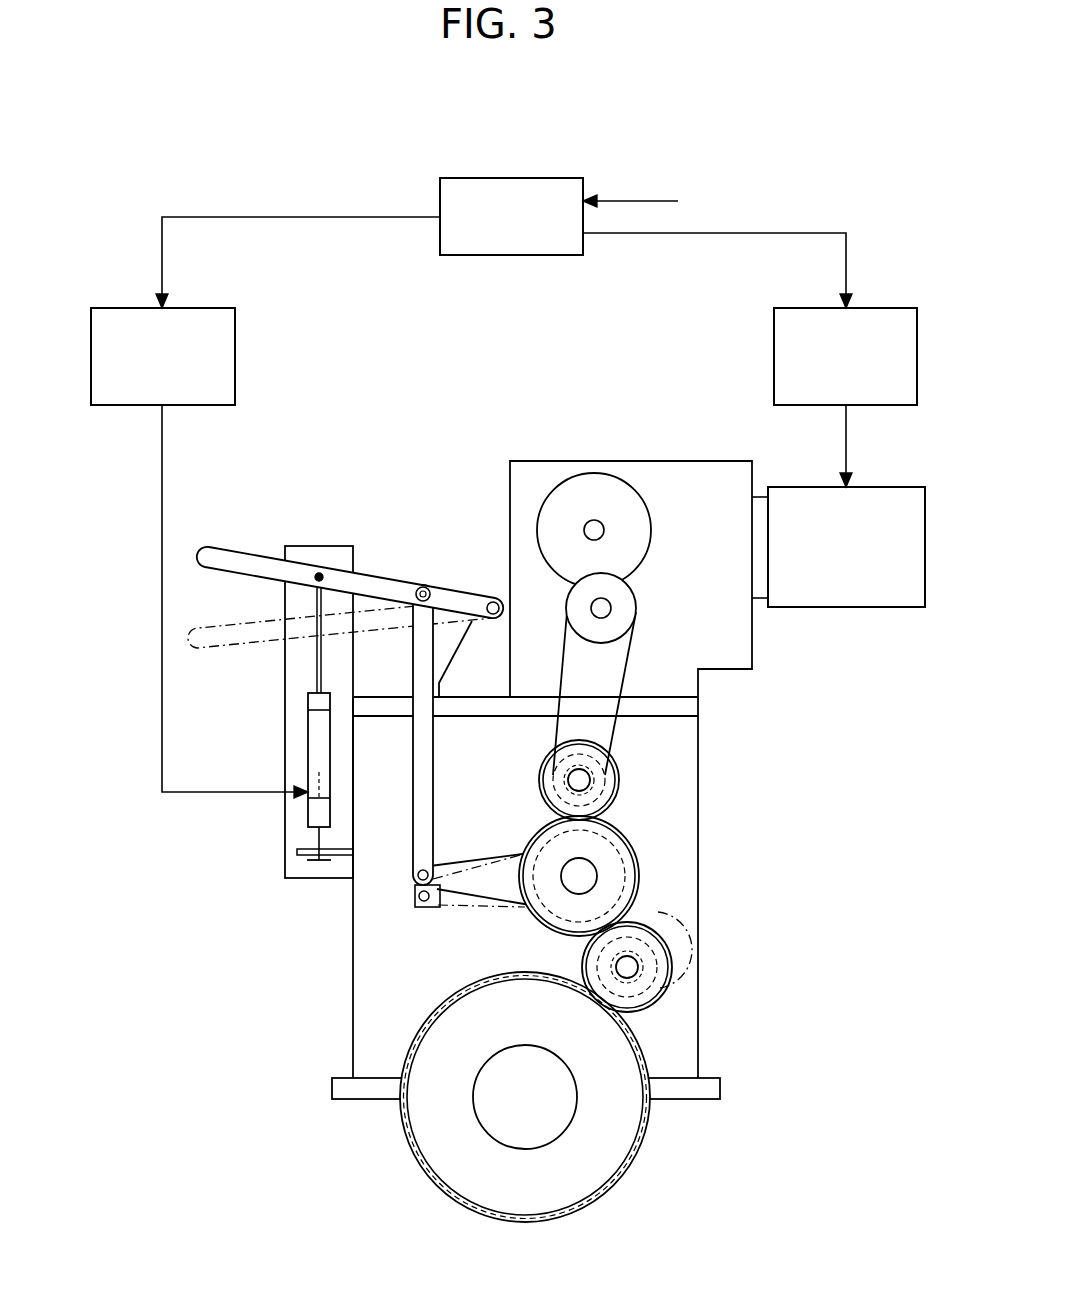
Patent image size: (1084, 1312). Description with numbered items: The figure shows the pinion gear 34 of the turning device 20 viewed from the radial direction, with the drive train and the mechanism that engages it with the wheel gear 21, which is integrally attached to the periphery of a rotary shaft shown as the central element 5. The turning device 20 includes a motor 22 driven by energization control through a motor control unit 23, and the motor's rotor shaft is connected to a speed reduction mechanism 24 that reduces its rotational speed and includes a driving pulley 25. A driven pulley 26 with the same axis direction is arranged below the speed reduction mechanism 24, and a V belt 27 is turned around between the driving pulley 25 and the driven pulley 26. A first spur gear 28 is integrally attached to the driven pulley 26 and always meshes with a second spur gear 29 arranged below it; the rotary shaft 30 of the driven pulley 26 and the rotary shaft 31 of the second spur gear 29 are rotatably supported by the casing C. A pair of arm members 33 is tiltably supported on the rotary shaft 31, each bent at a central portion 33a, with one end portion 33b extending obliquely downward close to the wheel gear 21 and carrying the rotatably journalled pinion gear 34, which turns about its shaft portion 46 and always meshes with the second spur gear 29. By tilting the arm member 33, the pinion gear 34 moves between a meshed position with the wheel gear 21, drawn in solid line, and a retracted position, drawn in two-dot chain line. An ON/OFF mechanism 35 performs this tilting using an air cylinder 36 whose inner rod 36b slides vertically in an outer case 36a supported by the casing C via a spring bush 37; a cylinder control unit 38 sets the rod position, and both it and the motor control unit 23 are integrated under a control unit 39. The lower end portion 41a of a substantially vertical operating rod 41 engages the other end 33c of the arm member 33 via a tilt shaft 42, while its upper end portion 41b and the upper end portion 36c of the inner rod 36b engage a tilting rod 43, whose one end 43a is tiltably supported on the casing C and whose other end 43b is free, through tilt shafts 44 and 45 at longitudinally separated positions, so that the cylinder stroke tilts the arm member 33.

The roll 5 is at (540, 1128).
The turning device 20 is at (232, 149).
The wheel gear 21 is at (652, 1118).
The motor 22 is at (888, 486).
The motor control unit 23 is at (890, 307).
The speed reduction mechanism 24 is at (676, 460).
The driving pulley 25 is at (624, 606).
The driven pulley 26 is at (500, 816).
The V belt 27 is at (632, 665).
The first spur gear 28 is at (566, 780).
The second spur gear 29 is at (628, 830).
The rotary shaft 30 is at (568, 790).
The rotary shaft 31 is at (582, 876).
The arm member 33 is at (470, 860).
The central portion 33a is at (560, 903).
The one end portion 33b is at (662, 948).
The other end 33c is at (426, 906).
The pinion gear 34 is at (650, 922).
The ON/OFF mechanism 35 is at (358, 520).
The air cylinder 36 is at (296, 712).
The outer case 36a is at (310, 748).
The inner rod 36b is at (316, 665).
The upper end portion 36c is at (317, 573).
The spring bush 37 is at (300, 848).
The cylinder control unit 38 is at (122, 307).
The control unit 39 is at (505, 177).
The operating rod 41 is at (434, 745).
The lower end portion 41a is at (418, 878).
The upper end portion 41b is at (428, 588).
The tilt shaft 42 is at (420, 893).
The tilting rod 43 is at (240, 557).
The one end 43a is at (493, 600).
The arm end 43b is at (204, 556).
The tilt shaft 44 is at (424, 584).
The tilt shaft 45 is at (317, 545).
The shaft portion 46 is at (630, 967).
The casing C is at (700, 780).